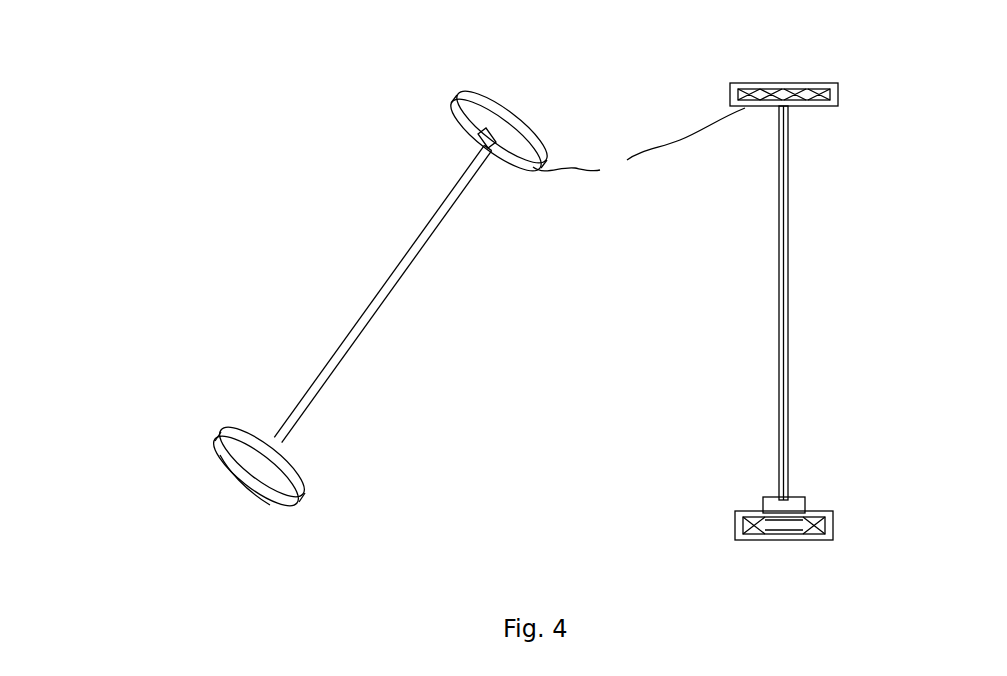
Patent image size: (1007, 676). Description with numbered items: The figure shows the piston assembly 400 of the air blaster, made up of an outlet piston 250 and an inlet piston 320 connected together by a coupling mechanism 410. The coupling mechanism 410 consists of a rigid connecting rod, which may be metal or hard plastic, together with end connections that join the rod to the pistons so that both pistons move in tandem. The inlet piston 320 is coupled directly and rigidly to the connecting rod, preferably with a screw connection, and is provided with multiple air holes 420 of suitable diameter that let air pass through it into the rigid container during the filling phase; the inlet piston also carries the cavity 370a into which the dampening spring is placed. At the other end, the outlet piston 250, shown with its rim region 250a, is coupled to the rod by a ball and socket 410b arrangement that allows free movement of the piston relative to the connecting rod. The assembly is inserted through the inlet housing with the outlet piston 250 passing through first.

The piston assembly 400 is at (134, 78).
The inlet piston 320 is at (455, 103).
The coupling mechanism 410 is at (405, 256).
The outlet piston 250 is at (310, 486).
The lower disc rim 250a is at (220, 455).
The air holes 420 is at (639, 153).
The cavity of the inlet piston 370a is at (818, 84).
The ball and socket 410b is at (760, 455).